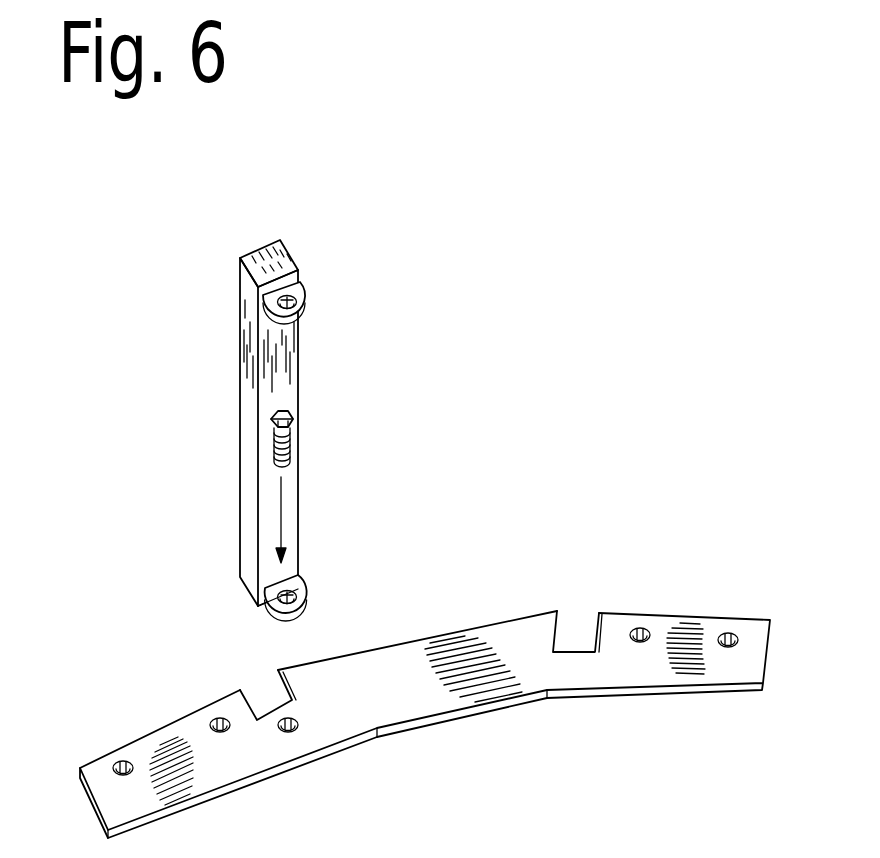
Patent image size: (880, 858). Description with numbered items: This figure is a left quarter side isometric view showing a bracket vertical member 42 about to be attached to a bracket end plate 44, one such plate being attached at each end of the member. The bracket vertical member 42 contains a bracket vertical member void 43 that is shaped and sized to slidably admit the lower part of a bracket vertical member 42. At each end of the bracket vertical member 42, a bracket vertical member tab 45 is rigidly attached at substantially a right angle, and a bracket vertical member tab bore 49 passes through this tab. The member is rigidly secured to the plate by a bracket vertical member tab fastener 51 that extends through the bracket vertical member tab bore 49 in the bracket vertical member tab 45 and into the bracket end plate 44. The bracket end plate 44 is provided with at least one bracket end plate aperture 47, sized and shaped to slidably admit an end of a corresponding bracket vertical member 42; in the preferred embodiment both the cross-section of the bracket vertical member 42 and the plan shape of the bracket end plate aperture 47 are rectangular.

The bracket vertical member 42 is at (241, 418).
The bracket vertical member void 43 is at (269, 243).
The bracket end plate 44 is at (413, 705).
The bracket vertical member tab 45 is at (302, 326).
The bracket end plate aperture 47 is at (267, 698).
The bracket vertical member tab bore 49 is at (296, 301).
The bracket vertical member tab fastener 51 is at (292, 442).